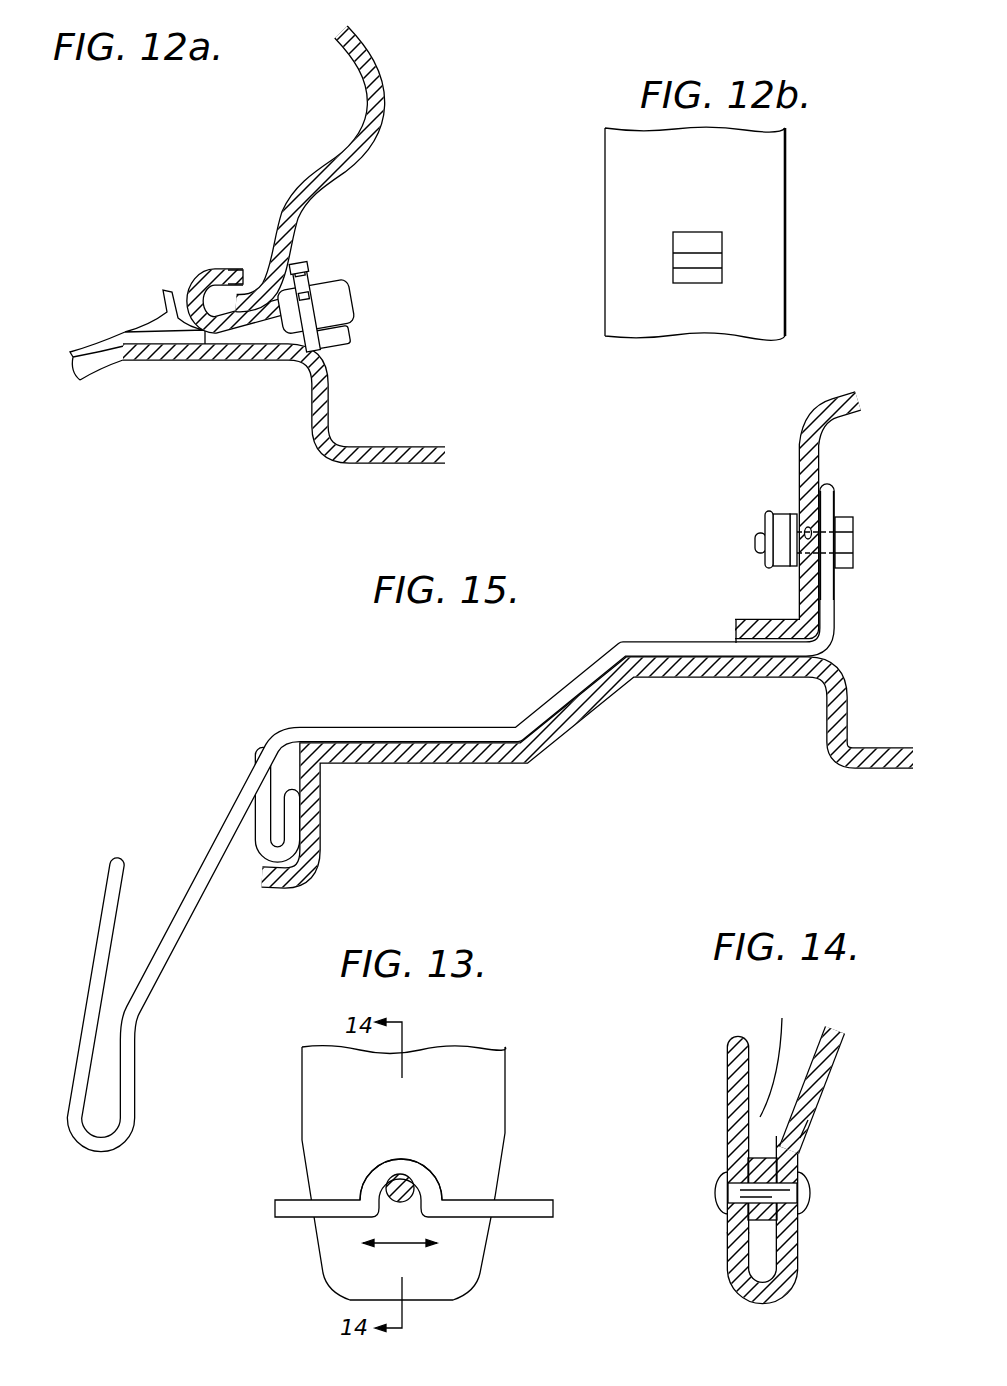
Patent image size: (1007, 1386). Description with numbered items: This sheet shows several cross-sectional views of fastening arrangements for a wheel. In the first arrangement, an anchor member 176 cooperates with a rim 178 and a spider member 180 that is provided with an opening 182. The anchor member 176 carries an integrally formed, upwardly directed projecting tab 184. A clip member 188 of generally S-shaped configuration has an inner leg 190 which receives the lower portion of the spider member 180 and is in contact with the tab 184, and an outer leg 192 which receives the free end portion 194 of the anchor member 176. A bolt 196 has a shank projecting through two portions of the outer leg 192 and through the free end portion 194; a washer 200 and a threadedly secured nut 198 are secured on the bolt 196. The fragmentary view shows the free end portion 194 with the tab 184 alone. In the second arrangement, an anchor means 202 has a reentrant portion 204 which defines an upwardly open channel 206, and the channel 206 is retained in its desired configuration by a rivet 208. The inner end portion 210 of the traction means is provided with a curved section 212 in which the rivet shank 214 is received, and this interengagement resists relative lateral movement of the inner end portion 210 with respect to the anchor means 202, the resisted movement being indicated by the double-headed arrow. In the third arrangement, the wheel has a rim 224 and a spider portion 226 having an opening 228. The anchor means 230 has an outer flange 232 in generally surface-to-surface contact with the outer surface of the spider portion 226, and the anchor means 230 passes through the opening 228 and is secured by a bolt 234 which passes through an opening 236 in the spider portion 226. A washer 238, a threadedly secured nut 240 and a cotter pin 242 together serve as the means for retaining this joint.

In FIG. 12a, the anchor member 176 is at (98, 340).
In FIG. 12a, the rim 178 is at (404, 447).
In FIG. 12a, the spider member 180 is at (343, 165).
In FIG. 12a, the opening 182 is at (220, 282).
In FIG. 12a, the projecting tab 184 is at (178, 300).
In FIG. 12b, the projecting tab 184 is at (683, 260).
In FIG. 12a, the clip member 188 is at (361, 298).
In FIG. 12a, the inner leg 190 is at (236, 266).
In FIG. 12a, the outer leg 192 is at (356, 318).
In FIG. 12a, the free end portion 194 is at (272, 360).
In FIG. 12b, the free end portion 194 is at (774, 184).
In FIG. 12a, the bolt 196 is at (337, 350).
In FIG. 12a, the nut 198 is at (303, 278).
In FIG. 12a, the washer 200 is at (306, 294).
In FIG. 14, the anchor means 202 is at (828, 1080).
In FIG. 14, the reentrant portion 204 is at (727, 1075).
In FIG. 14, the channel 206 is at (781, 1056).
In FIG. 14, the rivet 208 is at (810, 1193).
In FIG. 13, the inner end portion 210 is at (534, 1199).
In FIG. 13, the curved section 212 is at (378, 1170).
In FIG. 14, the curved section 212 is at (800, 1130).
In FIG. 13, the rivet shank 214 is at (411, 1178).
In FIG. 14, the rivet shank 214 is at (728, 1247).
In FIG. 15, the rim 224 is at (829, 718).
In FIG. 15, the spider portion 226 is at (799, 450).
In FIG. 15, the opening 228 is at (736, 637).
In FIG. 15, the anchor means 230 is at (371, 727).
In FIG. 15, the outer flange 232 is at (834, 603).
In FIG. 15, the bolt 234 is at (851, 517).
In FIG. 15, the opening 236 is at (807, 527).
In FIG. 15, the washer 238 is at (795, 575).
In FIG. 15, the nut 240 is at (782, 567).
In FIG. 15, the cotter pin 242 is at (764, 517).